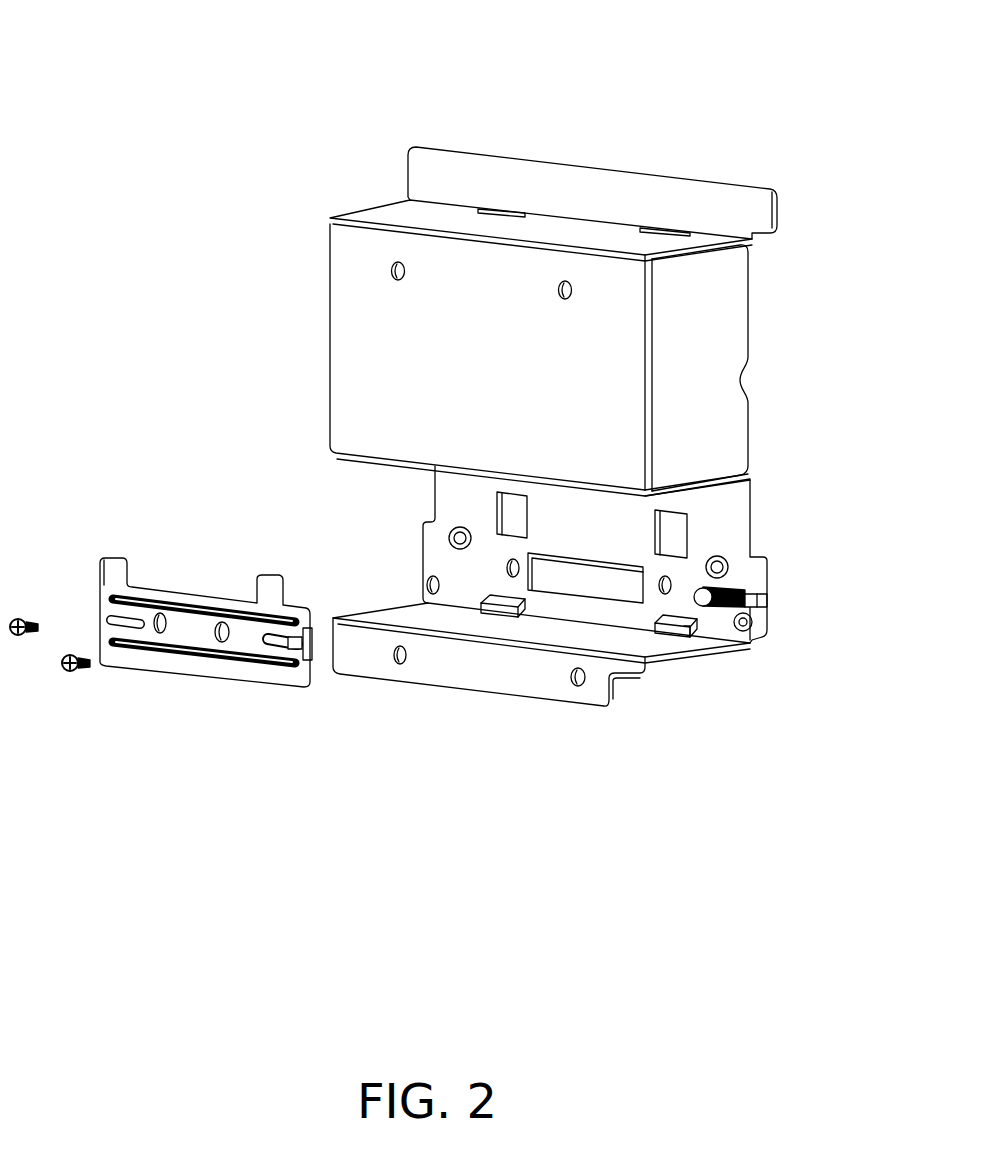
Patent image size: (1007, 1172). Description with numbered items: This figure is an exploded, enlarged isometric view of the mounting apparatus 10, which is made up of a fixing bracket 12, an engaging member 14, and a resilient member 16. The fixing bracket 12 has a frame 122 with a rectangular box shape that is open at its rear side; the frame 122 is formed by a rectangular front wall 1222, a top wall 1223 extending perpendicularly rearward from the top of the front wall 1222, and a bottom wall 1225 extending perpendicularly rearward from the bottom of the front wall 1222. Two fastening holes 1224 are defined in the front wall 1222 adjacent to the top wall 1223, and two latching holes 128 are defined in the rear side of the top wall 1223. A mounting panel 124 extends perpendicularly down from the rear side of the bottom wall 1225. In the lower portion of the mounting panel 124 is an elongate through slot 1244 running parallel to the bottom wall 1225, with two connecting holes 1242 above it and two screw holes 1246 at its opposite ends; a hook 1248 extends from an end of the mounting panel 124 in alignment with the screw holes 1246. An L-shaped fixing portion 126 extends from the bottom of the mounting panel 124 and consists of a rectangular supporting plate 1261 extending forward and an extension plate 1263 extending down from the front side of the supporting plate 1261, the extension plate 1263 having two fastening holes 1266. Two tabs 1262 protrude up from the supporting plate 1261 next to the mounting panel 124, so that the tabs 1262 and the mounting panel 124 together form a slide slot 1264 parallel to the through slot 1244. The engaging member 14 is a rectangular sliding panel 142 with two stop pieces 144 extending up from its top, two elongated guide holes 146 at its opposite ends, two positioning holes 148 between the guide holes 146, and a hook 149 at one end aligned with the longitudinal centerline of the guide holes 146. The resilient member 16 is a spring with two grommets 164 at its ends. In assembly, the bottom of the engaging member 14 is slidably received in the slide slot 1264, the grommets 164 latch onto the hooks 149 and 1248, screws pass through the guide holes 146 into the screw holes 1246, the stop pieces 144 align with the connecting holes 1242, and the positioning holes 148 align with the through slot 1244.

The mounting apparatus 10 is at (172, 82).
The fixing bracket 12 is at (293, 198).
The engaging member 14 is at (167, 712).
The resilient member 16 is at (733, 596).
The frame 122 is at (750, 316).
The mounting panel 124 is at (440, 550).
The fixing portion 126 is at (380, 613).
The latching holes 128 is at (503, 207).
The front wall 1222 is at (348, 348).
The top wall 1223 is at (588, 228).
The fastening holes 1224 is at (392, 268).
The bottom wall 1225 is at (703, 487).
The connecting holes 1242 is at (497, 510).
The through slot 1244 is at (577, 575).
The screw holes 1246 is at (673, 594).
The hook 1248 is at (763, 613).
The supporting plate 1261 is at (495, 620).
The tabs 1262 is at (668, 633).
The extension plate 1263 is at (428, 668).
The slide slot 1264 is at (692, 628).
The fastening holes 1266 is at (577, 680).
The sliding panel 142 is at (196, 636).
The stop pieces 144 is at (108, 567).
The guide holes 146 is at (102, 617).
The positioning holes 148 is at (162, 620).
The hook 149 is at (288, 652).
The grommets 164 is at (705, 575).